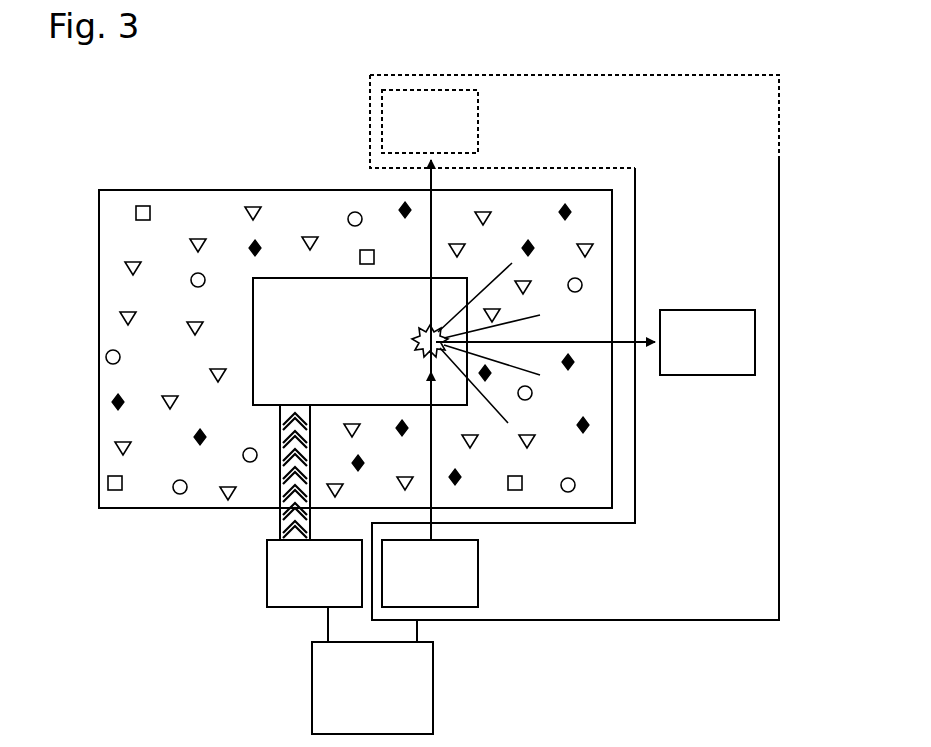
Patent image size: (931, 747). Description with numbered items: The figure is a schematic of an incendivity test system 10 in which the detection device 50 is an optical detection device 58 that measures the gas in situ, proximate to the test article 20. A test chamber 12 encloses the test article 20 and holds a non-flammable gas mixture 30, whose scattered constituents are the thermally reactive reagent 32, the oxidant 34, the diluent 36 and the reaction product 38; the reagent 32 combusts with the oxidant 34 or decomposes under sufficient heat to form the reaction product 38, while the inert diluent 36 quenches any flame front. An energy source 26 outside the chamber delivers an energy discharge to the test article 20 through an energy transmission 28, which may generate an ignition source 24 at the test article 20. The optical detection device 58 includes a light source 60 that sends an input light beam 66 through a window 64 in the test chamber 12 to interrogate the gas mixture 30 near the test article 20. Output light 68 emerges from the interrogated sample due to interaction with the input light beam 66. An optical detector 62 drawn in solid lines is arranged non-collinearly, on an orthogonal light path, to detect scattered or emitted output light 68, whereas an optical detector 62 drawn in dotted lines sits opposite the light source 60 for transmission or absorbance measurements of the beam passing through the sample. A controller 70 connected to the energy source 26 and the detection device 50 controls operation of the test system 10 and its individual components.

The incendivity test system 10 is at (706, 38).
The test chamber 12 is at (99, 258).
The test article 20 is at (360, 341).
The ignition source 24 is at (420, 333).
The energy source 26 is at (314, 573).
The energy transmission 28 is at (282, 525).
The non-flammable gas mixture 30 is at (182, 208).
The thermally reactive reagent 32 is at (106, 360).
The oxidant 34 is at (110, 405).
The diluent 36 is at (112, 446).
The reaction product 38 is at (106, 484).
The detection device 50 is at (783, 233).
The optical detection device 58 is at (781, 196).
The light source 60 is at (430, 573).
The optical detector 62 is at (568, 232).
The window 64 is at (431, 183).
The input light beam 66 is at (431, 464).
The output light 68 is at (431, 247).
The controller 70 is at (372, 670).